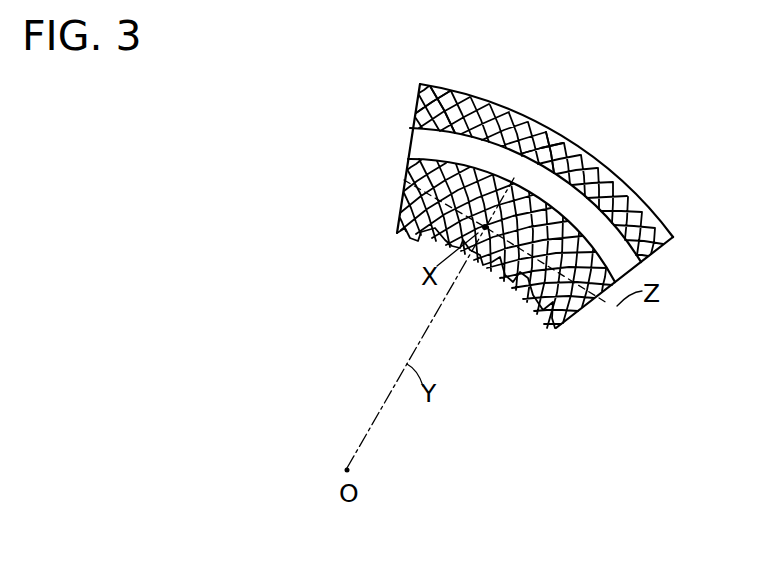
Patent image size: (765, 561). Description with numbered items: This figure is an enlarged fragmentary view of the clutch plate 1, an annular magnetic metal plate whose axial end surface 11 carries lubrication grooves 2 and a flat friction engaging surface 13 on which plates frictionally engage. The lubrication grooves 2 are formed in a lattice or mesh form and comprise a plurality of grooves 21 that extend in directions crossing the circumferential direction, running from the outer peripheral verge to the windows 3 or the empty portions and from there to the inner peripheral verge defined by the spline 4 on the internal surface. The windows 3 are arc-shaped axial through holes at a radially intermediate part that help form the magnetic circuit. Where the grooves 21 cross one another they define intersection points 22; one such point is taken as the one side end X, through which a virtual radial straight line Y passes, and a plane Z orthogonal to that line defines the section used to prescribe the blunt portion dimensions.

The clutch plate 1 is at (386, 56).
The lubrication grooves 2 is at (570, 151).
The windows 3 is at (418, 143).
The spline 4 is at (417, 238).
The axial end surface 11 is at (425, 76).
The friction engaging surface 13 is at (466, 100).
The grooves 21 is at (556, 136).
The intersection points 22 is at (540, 123).